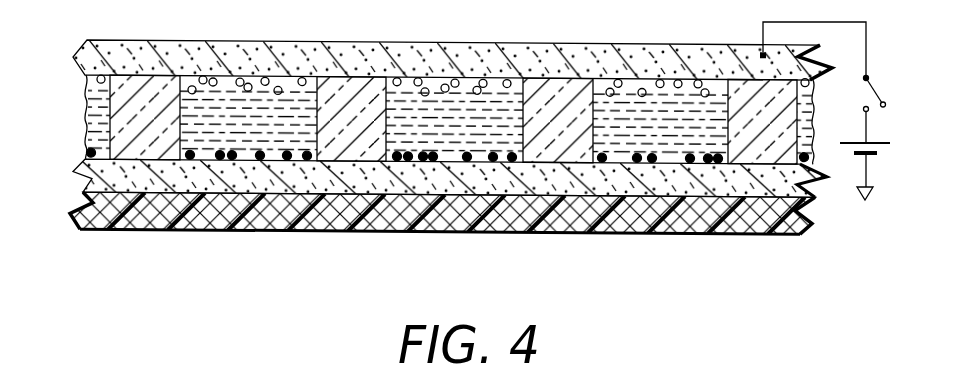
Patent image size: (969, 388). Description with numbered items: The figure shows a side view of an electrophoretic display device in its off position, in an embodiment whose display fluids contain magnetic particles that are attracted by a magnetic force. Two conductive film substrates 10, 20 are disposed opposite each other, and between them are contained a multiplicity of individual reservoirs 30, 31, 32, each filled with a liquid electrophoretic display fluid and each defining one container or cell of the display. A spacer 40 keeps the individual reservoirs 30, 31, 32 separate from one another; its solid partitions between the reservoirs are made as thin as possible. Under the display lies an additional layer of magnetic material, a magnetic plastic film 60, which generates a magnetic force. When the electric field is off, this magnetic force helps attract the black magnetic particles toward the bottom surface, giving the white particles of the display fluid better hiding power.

The conductive film substrate 10 is at (92, 180).
The conductive film substrate 20 is at (164, 40).
The individual reservoir 30 is at (237, 133).
The individual reservoir 31 is at (462, 135).
The individual reservoir 32 is at (683, 138).
The spacer 40 is at (160, 116).
The magnetic plastic film 60 is at (130, 226).